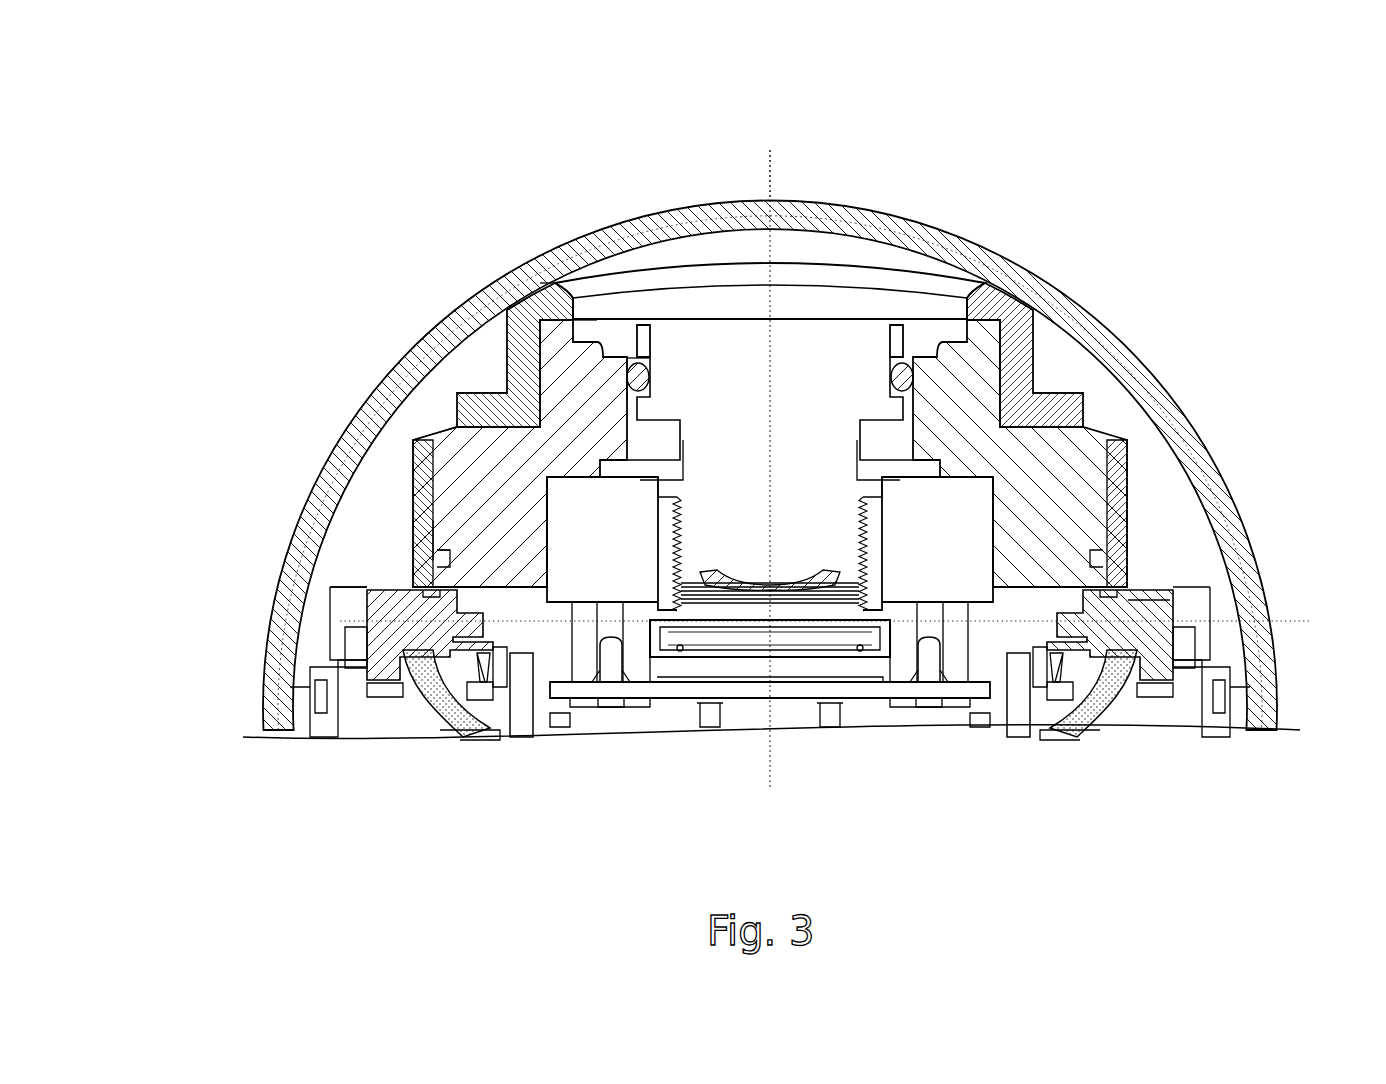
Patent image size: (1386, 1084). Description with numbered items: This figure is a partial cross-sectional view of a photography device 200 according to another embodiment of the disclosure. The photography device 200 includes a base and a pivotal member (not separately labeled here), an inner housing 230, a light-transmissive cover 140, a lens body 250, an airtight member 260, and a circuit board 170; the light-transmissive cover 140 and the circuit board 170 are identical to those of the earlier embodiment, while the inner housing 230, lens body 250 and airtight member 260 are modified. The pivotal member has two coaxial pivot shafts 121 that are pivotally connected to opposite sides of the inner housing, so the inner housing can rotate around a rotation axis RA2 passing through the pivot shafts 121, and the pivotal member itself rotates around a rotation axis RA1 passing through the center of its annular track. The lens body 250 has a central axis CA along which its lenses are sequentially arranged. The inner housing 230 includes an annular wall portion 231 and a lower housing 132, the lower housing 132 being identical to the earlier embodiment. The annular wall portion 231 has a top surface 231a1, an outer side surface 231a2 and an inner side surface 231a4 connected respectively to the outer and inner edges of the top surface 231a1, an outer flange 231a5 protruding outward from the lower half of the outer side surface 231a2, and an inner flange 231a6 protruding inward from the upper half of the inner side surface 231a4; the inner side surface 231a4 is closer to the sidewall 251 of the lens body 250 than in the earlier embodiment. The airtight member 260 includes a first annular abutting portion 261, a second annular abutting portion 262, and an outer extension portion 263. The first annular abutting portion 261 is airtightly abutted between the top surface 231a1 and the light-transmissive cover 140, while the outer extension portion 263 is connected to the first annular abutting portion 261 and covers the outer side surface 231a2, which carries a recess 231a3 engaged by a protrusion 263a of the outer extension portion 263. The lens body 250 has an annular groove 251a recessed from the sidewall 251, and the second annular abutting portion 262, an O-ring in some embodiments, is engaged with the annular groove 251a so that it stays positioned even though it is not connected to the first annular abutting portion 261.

The photography device 200 is at (1172, 110).
The light-transmissive cover 140 is at (985, 279).
The lens body 250 is at (828, 317).
The sidewall 251 is at (627, 413).
The annular groove 251a is at (664, 345).
The airtight member 260 is at (183, 828).
The first annular abutting portion 261 is at (548, 290).
The second annular abutting portion 262 is at (652, 376).
The outer extension portion 263 is at (456, 510).
The protrusion 263a is at (350, 588).
The inner housing 230 is at (770, 726).
The annular wall portion 231 is at (517, 640).
The top surface 231a1 is at (545, 283).
The outer side surface 231a2 is at (445, 440).
The recess 231a3 is at (440, 552).
The inner side surface 231a4 is at (588, 327).
The outer flange 231a5 is at (418, 532).
The inner flange 231a6 is at (628, 368).
The lower housing 132 is at (443, 732).
The pivot shaft 121 is at (1160, 601).
The circuit board 170 is at (953, 694).
The central axis CA is at (772, 158).
The rotation axis RA1 is at (1293, 622).
The rotation axis RA2 is at (768, 152).